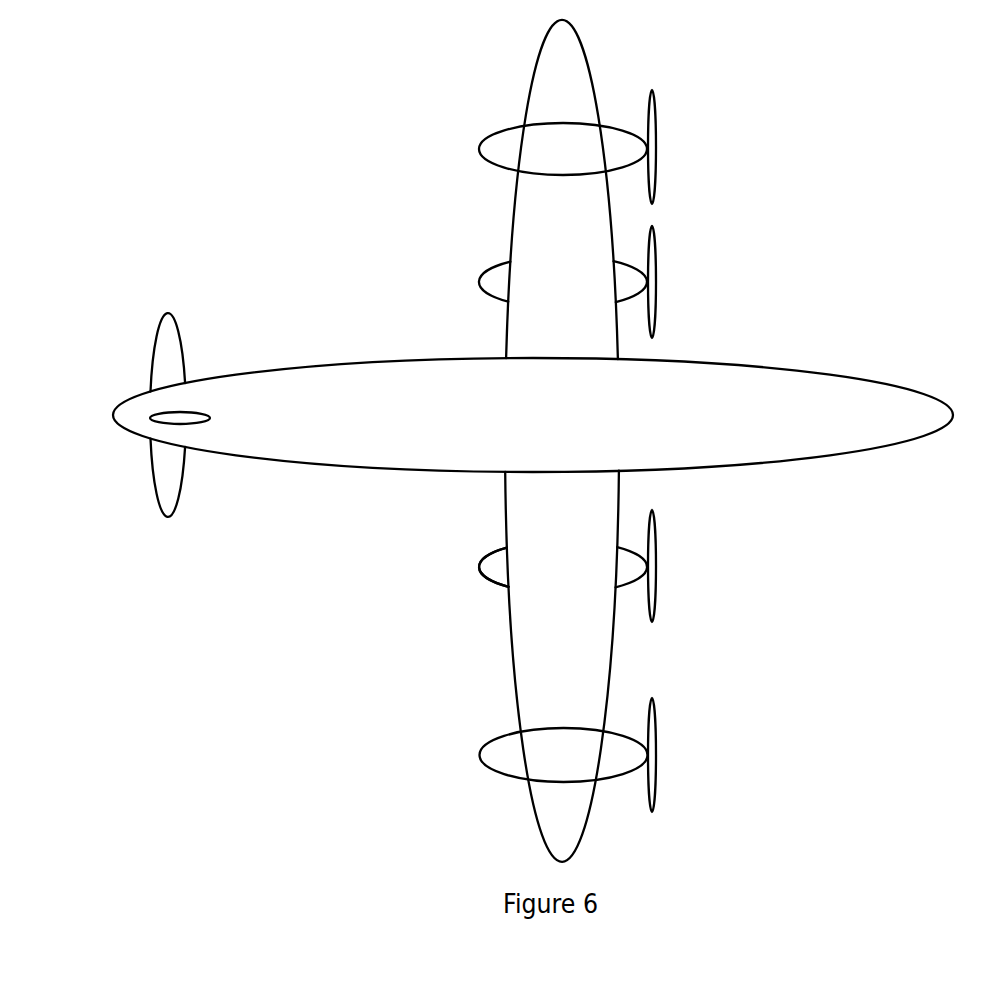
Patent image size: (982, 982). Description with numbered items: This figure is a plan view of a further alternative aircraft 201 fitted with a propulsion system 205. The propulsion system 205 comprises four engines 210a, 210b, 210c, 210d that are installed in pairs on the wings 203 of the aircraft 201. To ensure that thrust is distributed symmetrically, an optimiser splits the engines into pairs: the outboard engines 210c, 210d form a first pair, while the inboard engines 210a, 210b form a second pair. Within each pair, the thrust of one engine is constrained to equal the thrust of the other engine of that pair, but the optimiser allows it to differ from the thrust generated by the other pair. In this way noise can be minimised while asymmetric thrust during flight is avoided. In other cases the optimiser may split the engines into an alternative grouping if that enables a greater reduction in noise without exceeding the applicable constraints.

The aircraft 201 is at (818, 201).
The wings 203 is at (507, 545).
The propulsion system 205 is at (461, 89).
The inboard engine 210a is at (506, 262).
The inboard engine 210b is at (620, 587).
The outboard engine 210c is at (504, 128).
The outboard engine 210d is at (507, 735).